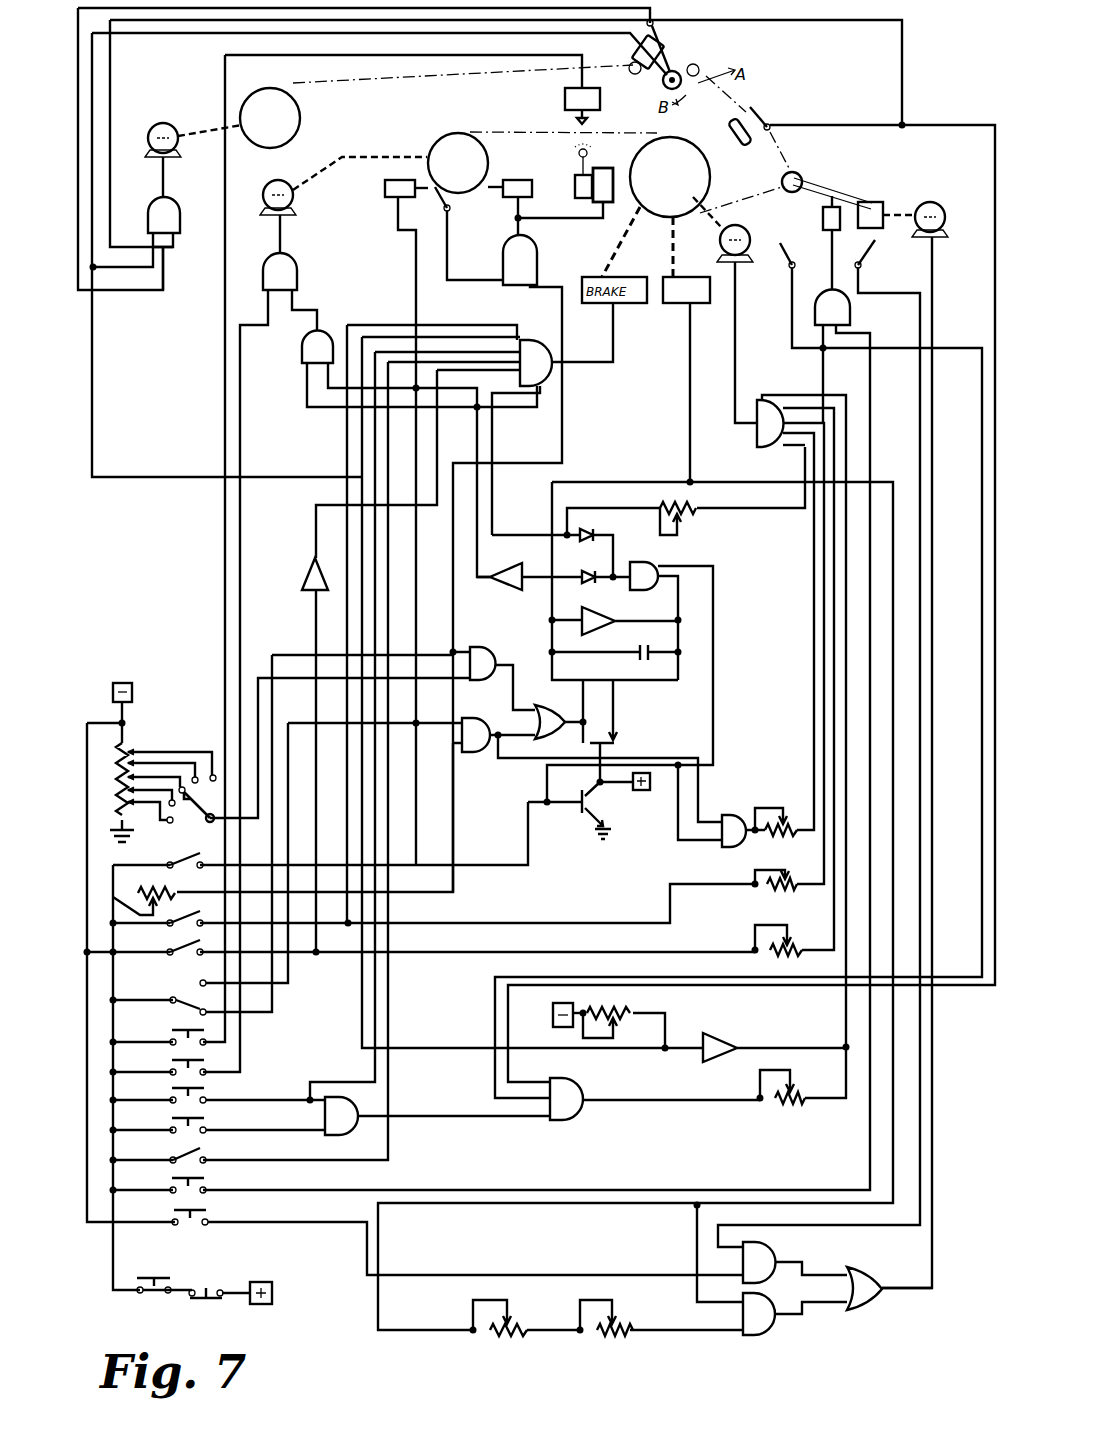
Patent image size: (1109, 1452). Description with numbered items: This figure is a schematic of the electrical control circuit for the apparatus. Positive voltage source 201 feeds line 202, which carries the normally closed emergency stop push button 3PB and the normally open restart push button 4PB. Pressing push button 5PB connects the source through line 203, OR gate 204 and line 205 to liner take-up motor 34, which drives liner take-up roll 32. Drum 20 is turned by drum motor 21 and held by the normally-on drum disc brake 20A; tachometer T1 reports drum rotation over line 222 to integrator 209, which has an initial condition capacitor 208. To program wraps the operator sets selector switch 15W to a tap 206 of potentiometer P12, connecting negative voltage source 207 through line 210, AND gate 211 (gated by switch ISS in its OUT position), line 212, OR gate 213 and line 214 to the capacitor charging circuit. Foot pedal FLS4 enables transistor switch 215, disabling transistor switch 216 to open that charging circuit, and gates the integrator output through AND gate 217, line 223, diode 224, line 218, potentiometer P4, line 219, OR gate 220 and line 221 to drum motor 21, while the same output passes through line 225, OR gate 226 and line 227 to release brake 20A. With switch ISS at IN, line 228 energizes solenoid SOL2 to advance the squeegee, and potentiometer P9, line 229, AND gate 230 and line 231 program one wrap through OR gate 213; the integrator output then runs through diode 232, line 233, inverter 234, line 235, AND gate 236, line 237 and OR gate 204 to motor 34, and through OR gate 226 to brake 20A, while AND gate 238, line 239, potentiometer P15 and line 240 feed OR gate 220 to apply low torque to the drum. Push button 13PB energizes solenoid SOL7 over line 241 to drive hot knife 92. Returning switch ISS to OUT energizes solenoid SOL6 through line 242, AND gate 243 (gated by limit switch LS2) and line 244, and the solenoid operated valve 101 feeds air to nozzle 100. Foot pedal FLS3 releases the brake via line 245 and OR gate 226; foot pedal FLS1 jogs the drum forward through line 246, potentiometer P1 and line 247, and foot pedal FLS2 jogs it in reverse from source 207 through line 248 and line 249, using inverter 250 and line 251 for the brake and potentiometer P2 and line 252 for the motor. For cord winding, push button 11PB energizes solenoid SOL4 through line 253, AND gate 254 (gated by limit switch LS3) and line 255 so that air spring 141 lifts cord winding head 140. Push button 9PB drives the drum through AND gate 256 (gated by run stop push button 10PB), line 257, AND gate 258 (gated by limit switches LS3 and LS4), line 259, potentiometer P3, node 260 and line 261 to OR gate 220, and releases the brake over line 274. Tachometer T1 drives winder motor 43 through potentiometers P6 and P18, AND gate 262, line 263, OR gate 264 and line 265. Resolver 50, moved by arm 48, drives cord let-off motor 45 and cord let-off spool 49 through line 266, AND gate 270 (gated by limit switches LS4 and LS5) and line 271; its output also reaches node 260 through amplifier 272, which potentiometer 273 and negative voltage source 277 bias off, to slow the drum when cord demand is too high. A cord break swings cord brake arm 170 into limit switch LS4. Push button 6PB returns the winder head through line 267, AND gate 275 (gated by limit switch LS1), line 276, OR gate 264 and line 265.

The drum 20 is at (712, 177).
The drum disc brake 20A is at (641, 250).
The drum motor 21 is at (743, 220).
The liner take-up roll 32 is at (461, 135).
The liner take-up motor 34 is at (264, 186).
The winder motor 43 is at (946, 217).
The cord let-off motor 45 is at (148, 140).
The arm 48 is at (676, 70).
The cord let-off spool 49 is at (300, 118).
The resolver 50 is at (632, 50).
The hot knife 92 is at (590, 118).
The nozzle 100 is at (588, 154).
The solenoid operated valve 101 is at (575, 203).
The cord winding head 140 is at (886, 180).
The air spring 141 is at (838, 192).
The cord brake arm 170 is at (732, 130).
The tachometer T1 is at (668, 309).
The positive voltage source 201 is at (276, 1285).
The line 202 is at (113, 1278).
The line 203 is at (242, 580).
The OR gate 204 is at (300, 272).
The line 205 is at (274, 238).
The tap 206 is at (193, 817).
The negative voltage source 207 is at (132, 683).
The initial condition capacitor 208 is at (637, 658).
The integrator 209 is at (706, 639).
The line 210 is at (260, 676).
The AND gate 211 is at (498, 640).
The line 212 is at (518, 672).
The OR gate 213 is at (557, 704).
The line 214 is at (570, 748).
The transistor switch 215 is at (578, 833).
The transistor switch 216 is at (616, 729).
The AND gate 217 is at (658, 578).
The line 218 is at (614, 508).
The line 219 is at (780, 497).
The OR gate 220 is at (768, 402).
The line 221 is at (740, 330).
The line 222 is at (672, 462).
The line 223 is at (635, 565).
The diode 224 is at (592, 533).
The line 225 is at (535, 518).
The OR gate 226 is at (540, 393).
The line 227 is at (621, 361).
The line 228 is at (292, 990).
The line 229 is at (453, 842).
The AND gate 230 is at (470, 752).
The line 231 is at (504, 722).
The diode 232 is at (597, 570).
The line 233 is at (534, 563).
The inverter 234 is at (501, 591).
The line 235 is at (490, 436).
The AND gate 236 is at (304, 350).
The line 237 is at (320, 303).
The AND gate 238 is at (738, 803).
The line 239 is at (742, 848).
The line 240 is at (812, 752).
The line 241 is at (226, 58).
The line 242 is at (574, 432).
The AND gate 243 is at (536, 266).
The line 244 is at (522, 219).
The line 245 is at (452, 322).
The line 246 is at (350, 823).
The line 247 is at (820, 710).
The line 248 is at (87, 720).
The line 249 is at (315, 623).
The inverter 250 is at (310, 560).
The line 251 is at (330, 506).
The line 252 is at (830, 680).
The line 253 is at (872, 380).
The AND gate 254 is at (848, 310).
The line 255 is at (860, 288).
The AND gate 256 is at (324, 1124).
The line 257 is at (459, 1116).
The AND gate 258 is at (586, 1100).
The line 259 is at (695, 1112).
The node 260 is at (844, 1044).
The line 261 is at (853, 387).
The AND gate 262 is at (754, 1337).
The line 263 is at (808, 1330).
The OR gate 264 is at (902, 1270).
The line 265 is at (933, 269).
The line 266 is at (167, 38).
The line 267 is at (264, 1222).
The AND gate 270 is at (168, 210).
The line 271 is at (158, 184).
The amplifier 272 is at (727, 1048).
The potentiometer 273 is at (640, 1008).
The line 274 is at (397, 302).
The AND gate 275 is at (741, 1264).
The line 276 is at (803, 1262).
The negative voltage source 277 is at (553, 1009).
The limit switch LS1 is at (878, 254).
The normally open limit switch LS2 is at (469, 233).
The normally closed limit switch LS3 is at (793, 248).
The normally closed limit switch LS4 is at (767, 108).
The normally open limit switch LS5 is at (667, 46).
The solenoid SOL2 is at (402, 181).
The solenoid SOL4 is at (810, 243).
The solenoid SOL6 is at (511, 181).
The solenoid SOL7 is at (562, 99).
The potentiometer P1 is at (774, 896).
The potentiometer P2 is at (818, 928).
The potentiometer P3 is at (796, 1116).
The potentiometer P4 is at (700, 526).
The potentiometer P6 is at (516, 1350).
The potentiometer P9 is at (152, 886).
The potentiometer P12 is at (135, 740).
The potentiometer P15 is at (797, 803).
The potentiometer P18 is at (636, 1346).
The selector switch 15W is at (216, 764).
The foot pedal FLS1 is at (157, 931).
The foot pedal FLS2 is at (144, 959).
The foot pedal FLS3 is at (158, 1153).
The foot pedal FLS4 is at (162, 858).
The switch ISS is at (169, 994).
The normally closed emergency stop push button 3PB is at (208, 1278).
The normally open restart push button 4PB is at (172, 1268).
The push button 5PB is at (158, 1065).
The push button 6PB is at (166, 1215).
The push button 9PB is at (218, 1094).
The normally closed run stop push button 10PB is at (218, 1123).
The push button 11PB is at (158, 1183).
The push button 13PB is at (158, 1035).